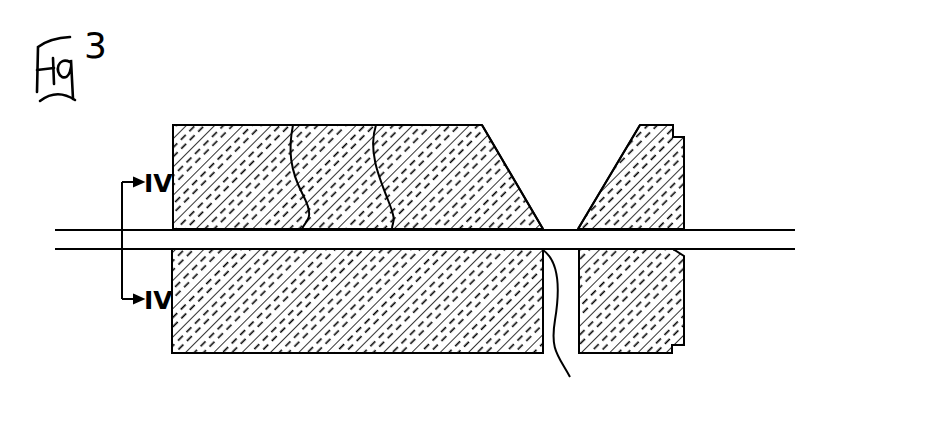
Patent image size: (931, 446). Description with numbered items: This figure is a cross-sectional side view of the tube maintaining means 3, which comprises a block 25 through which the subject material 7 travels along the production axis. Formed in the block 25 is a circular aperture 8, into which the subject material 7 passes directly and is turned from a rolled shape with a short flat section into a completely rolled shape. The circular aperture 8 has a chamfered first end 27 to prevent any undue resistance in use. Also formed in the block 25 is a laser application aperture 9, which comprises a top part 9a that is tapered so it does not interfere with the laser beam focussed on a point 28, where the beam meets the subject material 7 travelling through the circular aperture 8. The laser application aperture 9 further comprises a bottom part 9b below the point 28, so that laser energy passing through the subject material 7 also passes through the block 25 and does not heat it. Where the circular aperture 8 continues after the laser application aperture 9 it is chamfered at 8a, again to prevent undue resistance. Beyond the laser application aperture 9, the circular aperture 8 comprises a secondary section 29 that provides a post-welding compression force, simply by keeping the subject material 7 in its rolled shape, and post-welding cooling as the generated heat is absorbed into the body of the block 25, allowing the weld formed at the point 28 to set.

The tube maintaining means 3 is at (237, 66).
The subject material 7 is at (762, 228).
The circular aperture 8 is at (376, 125).
The chamfer 8a is at (570, 333).
The laser application aperture 9 is at (561, 157).
The top part 9a is at (613, 172).
The bottom part 9b is at (580, 313).
The block 25 is at (331, 125).
The chamfered first end 27 is at (678, 227).
The point 28 is at (560, 229).
The secondary section 29 is at (293, 125).